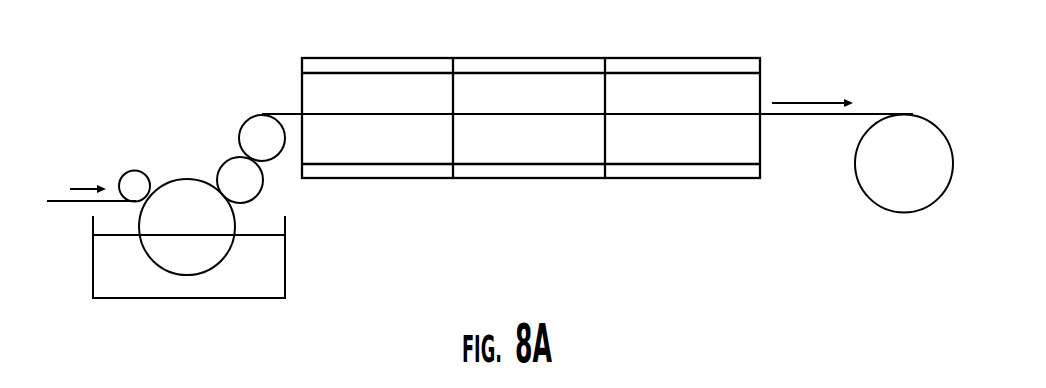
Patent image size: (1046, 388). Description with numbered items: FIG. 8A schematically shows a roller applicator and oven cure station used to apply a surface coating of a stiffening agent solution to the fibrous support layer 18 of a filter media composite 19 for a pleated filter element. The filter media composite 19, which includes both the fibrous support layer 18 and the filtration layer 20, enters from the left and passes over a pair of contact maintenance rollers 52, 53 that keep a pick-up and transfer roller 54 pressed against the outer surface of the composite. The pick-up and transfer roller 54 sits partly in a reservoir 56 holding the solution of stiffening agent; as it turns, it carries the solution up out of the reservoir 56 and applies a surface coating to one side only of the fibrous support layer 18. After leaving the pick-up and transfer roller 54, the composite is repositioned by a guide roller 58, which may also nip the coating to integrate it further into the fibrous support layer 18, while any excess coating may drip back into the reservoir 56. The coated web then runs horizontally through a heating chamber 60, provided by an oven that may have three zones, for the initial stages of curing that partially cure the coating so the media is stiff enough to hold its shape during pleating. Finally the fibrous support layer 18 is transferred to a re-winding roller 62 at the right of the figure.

The fibrous support layer 18 is at (82, 204).
The filter media composite 19 is at (112, 173).
The filtration layer 20 is at (62, 200).
The contact maintenance roller 52 is at (135, 175).
The contact maintenance roller 53 is at (250, 182).
The pick-up and transfer roller 54 is at (183, 257).
The reservoir 56 is at (268, 262).
The guide roller 58 is at (257, 135).
The heating chamber 60 is at (525, 82).
The re-winding roller 62 is at (887, 188).